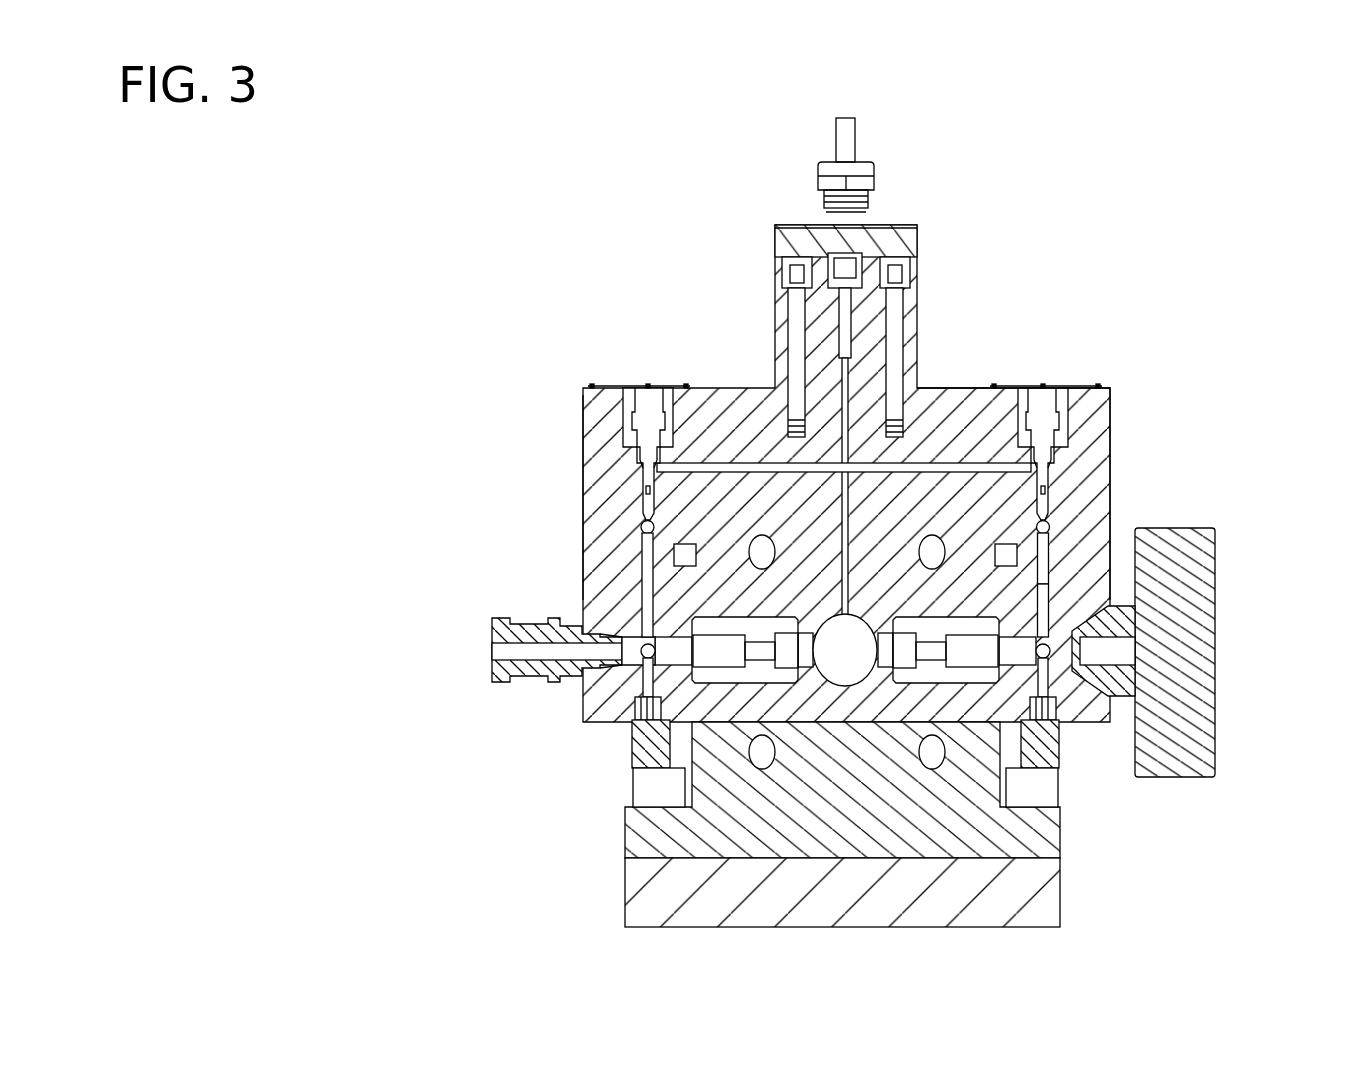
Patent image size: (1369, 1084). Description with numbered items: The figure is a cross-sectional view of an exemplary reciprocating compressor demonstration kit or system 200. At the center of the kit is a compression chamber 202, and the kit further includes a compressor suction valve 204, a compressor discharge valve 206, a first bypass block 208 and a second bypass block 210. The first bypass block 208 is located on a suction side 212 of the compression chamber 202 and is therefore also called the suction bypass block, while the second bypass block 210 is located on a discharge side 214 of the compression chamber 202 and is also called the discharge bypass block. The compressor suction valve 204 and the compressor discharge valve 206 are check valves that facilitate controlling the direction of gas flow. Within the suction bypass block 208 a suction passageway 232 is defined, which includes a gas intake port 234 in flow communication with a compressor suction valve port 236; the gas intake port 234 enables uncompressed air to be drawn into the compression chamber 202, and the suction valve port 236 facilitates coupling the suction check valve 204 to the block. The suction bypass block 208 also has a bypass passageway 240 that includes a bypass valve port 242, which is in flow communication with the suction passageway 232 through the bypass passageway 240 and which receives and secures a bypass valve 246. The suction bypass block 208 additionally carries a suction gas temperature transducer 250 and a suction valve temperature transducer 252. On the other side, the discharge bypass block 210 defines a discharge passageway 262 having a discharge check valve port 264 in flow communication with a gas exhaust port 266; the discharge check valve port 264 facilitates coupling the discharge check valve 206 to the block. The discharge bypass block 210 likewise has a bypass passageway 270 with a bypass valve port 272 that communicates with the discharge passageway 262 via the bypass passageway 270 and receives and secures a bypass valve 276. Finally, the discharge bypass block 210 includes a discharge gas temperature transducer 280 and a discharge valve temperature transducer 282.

The reciprocating compressor demonstration kit 200 is at (1005, 152).
The compression chamber 202 is at (772, 388).
The compressor suction valve 204 is at (1048, 605).
The compressor discharge valve 206 is at (700, 617).
The first bypass block 208 is at (1110, 392).
The second bypass block 210 is at (583, 412).
The suction side 212 is at (1162, 300).
The discharge side 214 is at (590, 292).
The suction passageway 232 is at (1147, 651).
The gas intake port 234 is at (1140, 655).
The compressor suction valve port 236 is at (1050, 685).
The bypass passageway 240 is at (1050, 540).
The bypass valve port 242 is at (1050, 522).
The bypass valve 246 is at (1046, 390).
The suction gas temperature transducer 250 is at (1112, 608).
The suction valve temperature transducer 252 is at (1036, 527).
The discharge passageway 262 is at (483, 652).
The discharge check valve port 264 is at (655, 680).
The gas exhaust port 266 is at (618, 655).
The bypass passageway 270 is at (622, 547).
The bypass valve port 272 is at (641, 521).
The bypass valve 276 is at (660, 390).
The discharge gas temperature transducer 280 is at (643, 663).
The discharge valve temperature transducer 282 is at (655, 527).